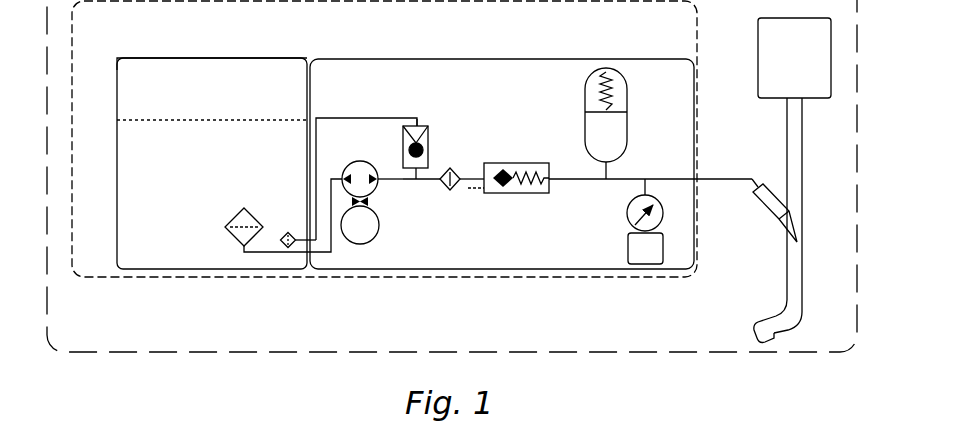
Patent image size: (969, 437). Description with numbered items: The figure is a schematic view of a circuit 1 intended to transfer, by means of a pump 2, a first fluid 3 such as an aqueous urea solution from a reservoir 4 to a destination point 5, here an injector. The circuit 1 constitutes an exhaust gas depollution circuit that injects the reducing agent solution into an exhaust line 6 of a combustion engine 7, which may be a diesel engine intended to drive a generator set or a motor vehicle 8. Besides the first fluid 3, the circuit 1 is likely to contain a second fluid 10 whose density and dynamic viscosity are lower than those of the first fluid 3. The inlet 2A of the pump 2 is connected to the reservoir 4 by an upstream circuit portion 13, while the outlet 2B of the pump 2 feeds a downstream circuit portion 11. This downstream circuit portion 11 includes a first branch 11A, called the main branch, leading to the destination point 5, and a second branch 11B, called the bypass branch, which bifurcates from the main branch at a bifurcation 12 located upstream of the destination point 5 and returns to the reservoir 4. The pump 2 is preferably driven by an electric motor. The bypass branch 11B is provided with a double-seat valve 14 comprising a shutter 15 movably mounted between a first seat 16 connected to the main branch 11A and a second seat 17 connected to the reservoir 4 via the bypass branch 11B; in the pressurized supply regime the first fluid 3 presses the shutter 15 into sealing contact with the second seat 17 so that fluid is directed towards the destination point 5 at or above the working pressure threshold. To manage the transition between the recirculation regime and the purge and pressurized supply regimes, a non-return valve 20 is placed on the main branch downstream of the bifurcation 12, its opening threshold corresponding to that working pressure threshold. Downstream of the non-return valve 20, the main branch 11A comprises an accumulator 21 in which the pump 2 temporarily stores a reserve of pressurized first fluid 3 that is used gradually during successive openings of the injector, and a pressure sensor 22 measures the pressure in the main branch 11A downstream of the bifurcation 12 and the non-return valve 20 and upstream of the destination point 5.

The circuit 1 is at (668, 291).
The pump 2 is at (346, 152).
The inlet of the pump 2A is at (341, 179).
The outlet of the pump 2B is at (380, 170).
The first fluid 3 is at (173, 183).
The reservoir 4 is at (186, 57).
The destination point 5 is at (770, 206).
The exhaust line 6 is at (790, 160).
The combustion engine 7 is at (802, 68).
The motor vehicle 8 is at (665, 353).
The second fluid 10 is at (216, 97).
The downstream circuit portion 11 is at (479, 269).
The first branch 11A is at (430, 187).
The second branch 11B is at (425, 120).
The bifurcation 12 is at (413, 184).
The upstream circuit portion 13 is at (320, 269).
The double-seat valve 14 is at (399, 122).
The shutter 15 is at (424, 150).
The first seat 16 is at (452, 160).
The second seat 17 is at (430, 128).
The non-return valve 20 is at (528, 194).
The accumulator 21 is at (628, 90).
The pressure sensor 22 is at (627, 241).